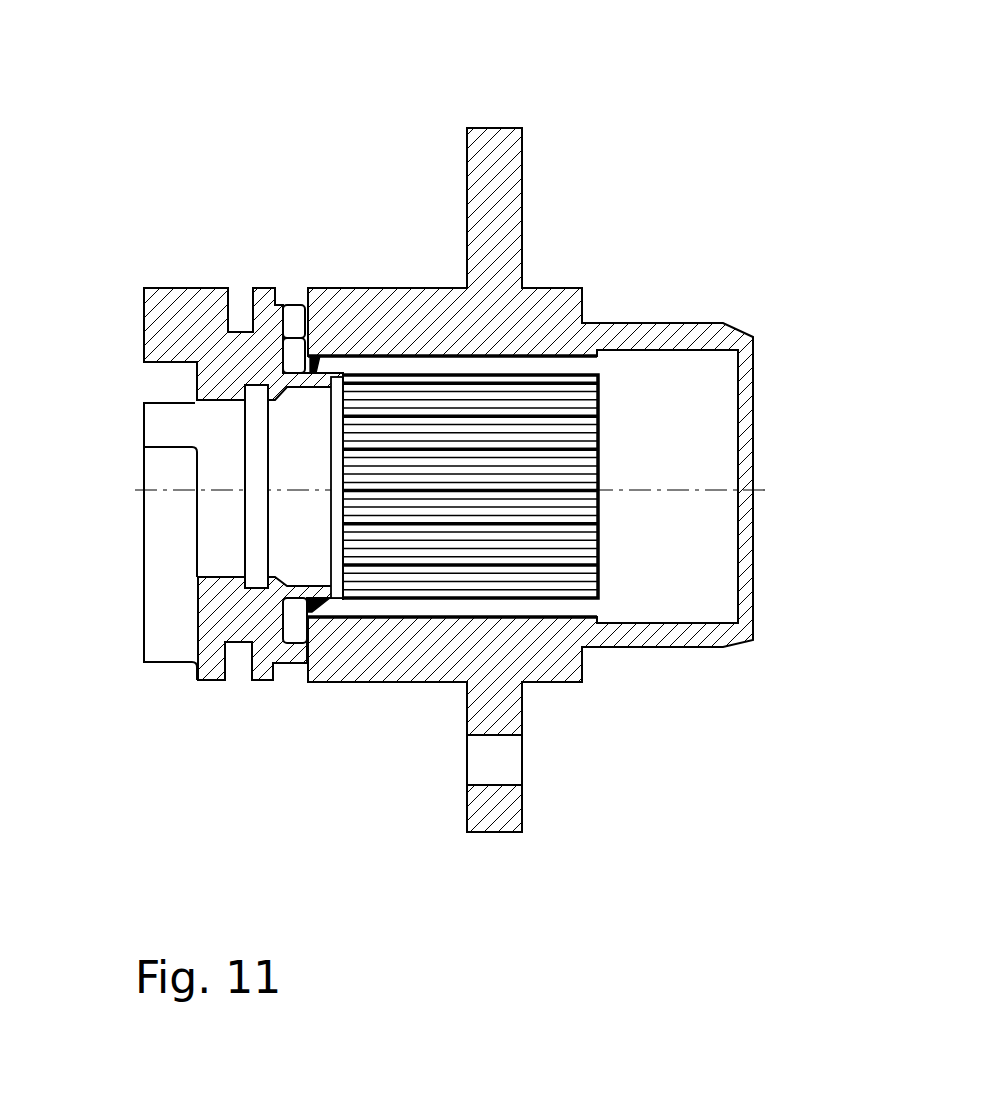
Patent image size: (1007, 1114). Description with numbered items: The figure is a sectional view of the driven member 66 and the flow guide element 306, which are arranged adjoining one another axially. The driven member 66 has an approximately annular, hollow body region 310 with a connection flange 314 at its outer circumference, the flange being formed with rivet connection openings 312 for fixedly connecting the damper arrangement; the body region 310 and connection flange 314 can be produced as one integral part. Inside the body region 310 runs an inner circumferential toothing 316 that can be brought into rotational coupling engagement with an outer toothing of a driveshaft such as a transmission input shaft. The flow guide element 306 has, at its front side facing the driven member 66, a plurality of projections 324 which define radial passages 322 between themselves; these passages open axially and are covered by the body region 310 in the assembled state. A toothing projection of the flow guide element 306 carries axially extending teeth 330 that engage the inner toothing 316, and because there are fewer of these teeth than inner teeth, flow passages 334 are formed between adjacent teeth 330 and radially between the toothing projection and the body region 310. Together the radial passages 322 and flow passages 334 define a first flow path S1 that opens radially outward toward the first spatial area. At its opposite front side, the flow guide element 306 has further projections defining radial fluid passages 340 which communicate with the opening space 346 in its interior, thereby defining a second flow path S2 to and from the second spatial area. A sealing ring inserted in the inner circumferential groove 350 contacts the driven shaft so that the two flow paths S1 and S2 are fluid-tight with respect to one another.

The driven member 66 is at (588, 163).
The flow guide element 306 is at (198, 208).
The body region 310 is at (548, 300).
The rivet connection openings 312 is at (495, 763).
The connection flange 314 is at (503, 135).
The inner circumferential toothing 316 is at (578, 556).
The radial passages 322 is at (295, 323).
The projections 324 is at (298, 650).
The teeth 330 is at (345, 603).
The flow passages 334 is at (340, 355).
The radial fluid passages 340 is at (166, 648).
The opening space 346 is at (212, 560).
The inner circumferential groove 350 is at (258, 447).
The first flow path S1 is at (280, 250).
The second flow path S2 is at (158, 520).